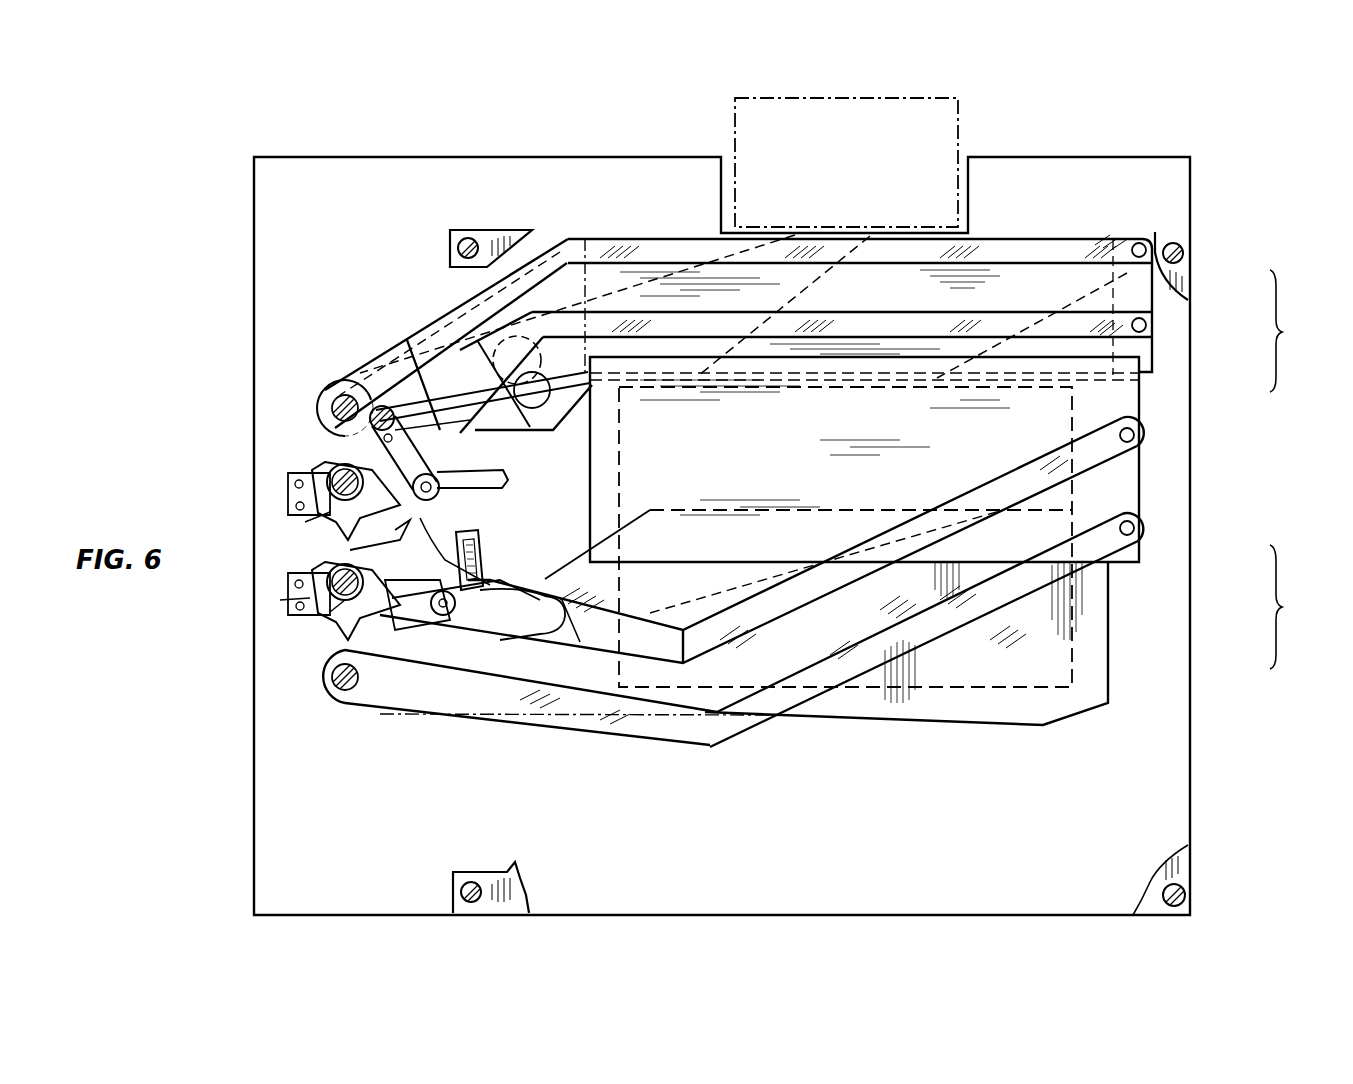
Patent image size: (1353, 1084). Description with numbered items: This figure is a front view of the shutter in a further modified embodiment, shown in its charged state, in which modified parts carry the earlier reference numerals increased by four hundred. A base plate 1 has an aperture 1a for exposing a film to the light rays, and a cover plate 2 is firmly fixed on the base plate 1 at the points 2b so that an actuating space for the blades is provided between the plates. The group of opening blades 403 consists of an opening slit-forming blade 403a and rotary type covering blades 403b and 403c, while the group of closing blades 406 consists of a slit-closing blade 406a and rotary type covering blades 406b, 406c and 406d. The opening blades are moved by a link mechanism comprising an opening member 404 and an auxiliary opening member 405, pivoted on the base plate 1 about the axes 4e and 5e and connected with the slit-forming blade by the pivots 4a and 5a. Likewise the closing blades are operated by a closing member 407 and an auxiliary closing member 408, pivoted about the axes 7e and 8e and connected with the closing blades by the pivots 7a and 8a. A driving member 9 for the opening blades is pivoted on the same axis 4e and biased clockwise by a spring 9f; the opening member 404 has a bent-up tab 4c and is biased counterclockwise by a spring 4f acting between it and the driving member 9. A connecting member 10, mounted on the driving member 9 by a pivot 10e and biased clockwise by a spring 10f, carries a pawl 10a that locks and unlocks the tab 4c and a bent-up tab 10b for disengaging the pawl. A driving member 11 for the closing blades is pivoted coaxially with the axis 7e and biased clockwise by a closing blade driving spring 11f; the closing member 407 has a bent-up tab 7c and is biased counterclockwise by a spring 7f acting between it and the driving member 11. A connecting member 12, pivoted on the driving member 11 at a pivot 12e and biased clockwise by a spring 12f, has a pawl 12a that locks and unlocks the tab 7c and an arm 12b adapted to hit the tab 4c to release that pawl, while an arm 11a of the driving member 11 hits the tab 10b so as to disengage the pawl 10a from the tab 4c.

The base plate 1 is at (1178, 740).
The aperture 1a is at (988, 690).
The cover plate 2 is at (1180, 860).
The fixing points 2b is at (469, 246).
The pivot 4a is at (1127, 428).
The bent-up tab 4c is at (478, 540).
The axis 4e is at (330, 602).
The spring 4f is at (336, 615).
The pivot 5a is at (1130, 522).
The axis 5e is at (342, 690).
The pivot 7a is at (1135, 322).
The bent-up tab 7c is at (390, 398).
The axis 7e is at (298, 484).
The spring 7f is at (320, 515).
The pivot 8a is at (1140, 243).
The axis 8e is at (338, 400).
The driving member for the opening blades 9 is at (400, 630).
The spring 9f is at (300, 600).
The connecting member 10 is at (425, 612).
The pawl 10a is at (470, 556).
The bent-up tab 10b is at (360, 546).
The pivot 10e is at (445, 618).
The spring 10f is at (490, 640).
The driving member for the closing blades 11 is at (338, 470).
The arm 11a is at (364, 601).
The closing blade driving spring 11f is at (298, 505).
The connecting member 12 is at (340, 442).
The pawl 12a is at (352, 390).
The arm 12b is at (507, 476).
The pivot 12e is at (440, 494).
The spring 12f is at (430, 436).
The group of opening blades 403 is at (1022, 630).
The opening slit-forming blade 403a is at (1140, 566).
The rotary type covering blade 403b is at (887, 592).
The rotary type covering blade 403c is at (1100, 605).
The opening member 404 is at (1088, 448).
The auxiliary opening member 405 is at (1090, 542).
The group of closing blades 406 is at (830, 334).
The slit-closing blade 406a is at (1150, 292).
The rotary type covering blade 406b is at (818, 278).
The rotary type covering blade 406c is at (1150, 318).
The rotary type covering blade 406d is at (1150, 347).
The closing member 407 is at (1080, 326).
The auxiliary closing member 408 is at (1106, 245).